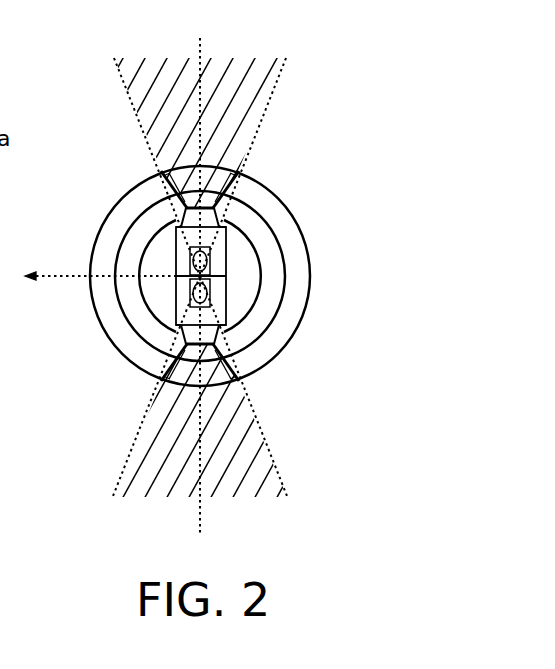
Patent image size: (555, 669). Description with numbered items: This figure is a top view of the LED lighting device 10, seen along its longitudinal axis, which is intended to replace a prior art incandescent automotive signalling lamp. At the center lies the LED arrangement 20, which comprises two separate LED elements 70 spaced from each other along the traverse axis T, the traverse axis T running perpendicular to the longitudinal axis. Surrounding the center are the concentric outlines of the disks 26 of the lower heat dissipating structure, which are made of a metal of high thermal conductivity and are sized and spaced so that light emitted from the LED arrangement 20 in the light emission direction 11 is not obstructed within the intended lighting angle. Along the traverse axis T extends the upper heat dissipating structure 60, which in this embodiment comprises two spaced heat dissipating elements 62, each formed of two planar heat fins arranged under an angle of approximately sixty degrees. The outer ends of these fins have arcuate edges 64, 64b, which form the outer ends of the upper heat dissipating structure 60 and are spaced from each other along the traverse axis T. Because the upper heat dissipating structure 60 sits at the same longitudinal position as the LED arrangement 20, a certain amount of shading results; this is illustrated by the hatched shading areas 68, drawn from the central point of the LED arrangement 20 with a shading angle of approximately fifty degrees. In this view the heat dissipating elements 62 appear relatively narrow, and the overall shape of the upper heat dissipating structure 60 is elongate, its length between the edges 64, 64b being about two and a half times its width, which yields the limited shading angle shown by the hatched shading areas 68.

The LED lighting device 10 is at (332, 205).
The light emission direction 11 is at (70, 277).
The LED arrangement 20 is at (159, 298).
The disks 26 is at (277, 288).
The upper heat dissipating structure 60 is at (293, 156).
The heat dissipating elements 62 is at (165, 197).
The arcuate edge 64 is at (160, 180).
The arcuate edge 64b is at (160, 375).
The hatched shading areas 68 is at (262, 73).
The LED elements 70 is at (210, 292).
The traverse axis T is at (201, 511).